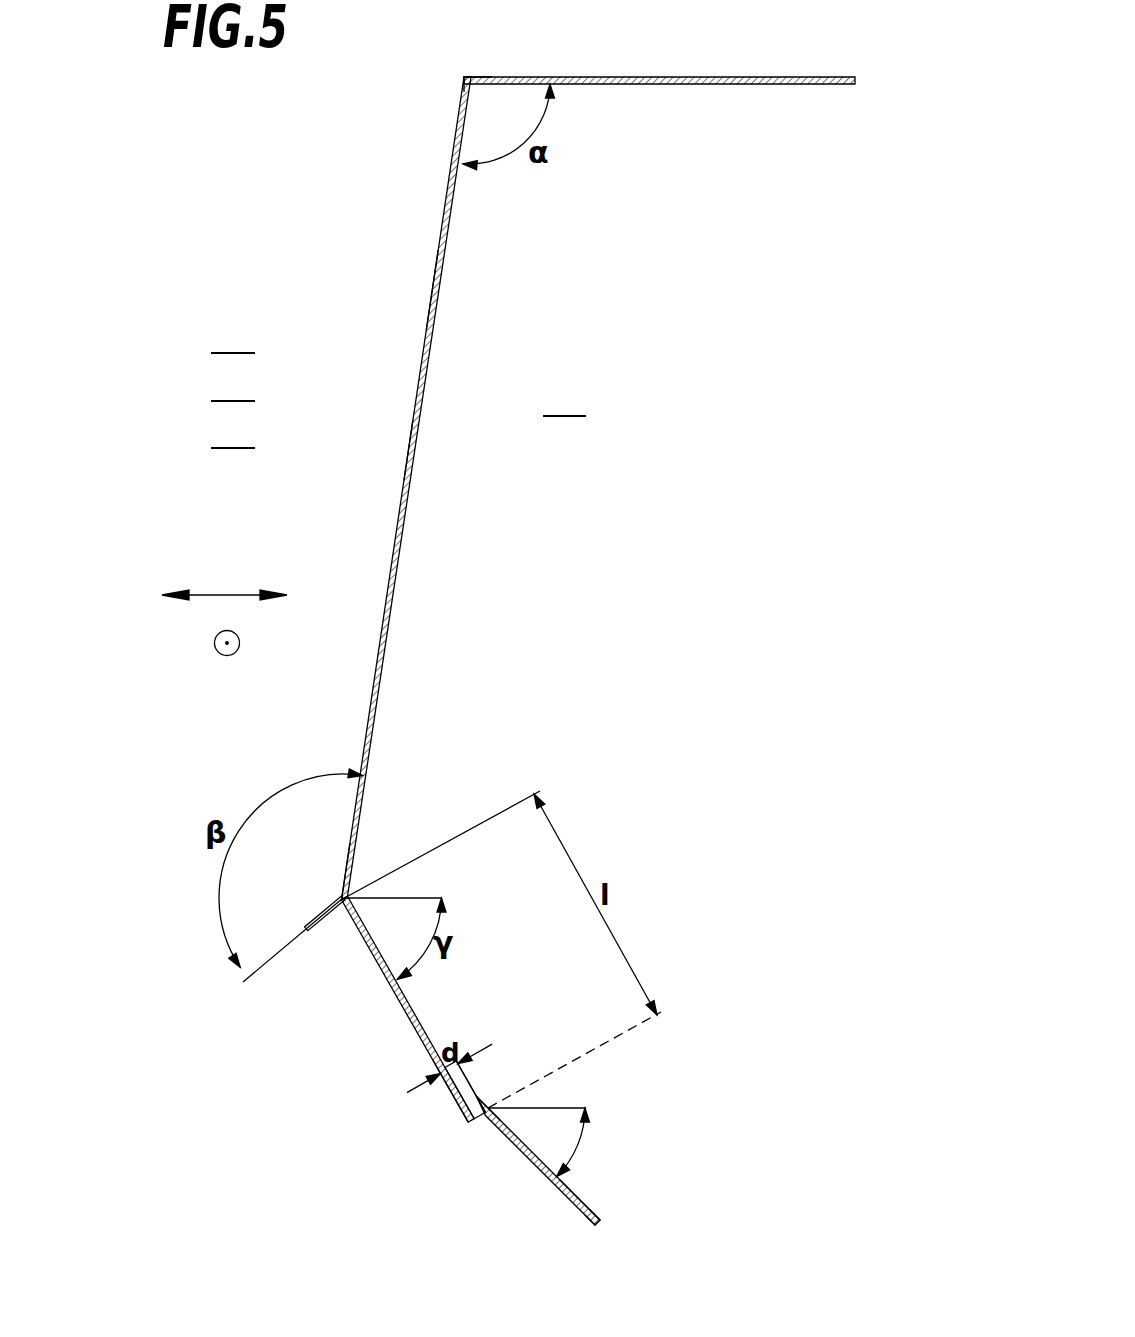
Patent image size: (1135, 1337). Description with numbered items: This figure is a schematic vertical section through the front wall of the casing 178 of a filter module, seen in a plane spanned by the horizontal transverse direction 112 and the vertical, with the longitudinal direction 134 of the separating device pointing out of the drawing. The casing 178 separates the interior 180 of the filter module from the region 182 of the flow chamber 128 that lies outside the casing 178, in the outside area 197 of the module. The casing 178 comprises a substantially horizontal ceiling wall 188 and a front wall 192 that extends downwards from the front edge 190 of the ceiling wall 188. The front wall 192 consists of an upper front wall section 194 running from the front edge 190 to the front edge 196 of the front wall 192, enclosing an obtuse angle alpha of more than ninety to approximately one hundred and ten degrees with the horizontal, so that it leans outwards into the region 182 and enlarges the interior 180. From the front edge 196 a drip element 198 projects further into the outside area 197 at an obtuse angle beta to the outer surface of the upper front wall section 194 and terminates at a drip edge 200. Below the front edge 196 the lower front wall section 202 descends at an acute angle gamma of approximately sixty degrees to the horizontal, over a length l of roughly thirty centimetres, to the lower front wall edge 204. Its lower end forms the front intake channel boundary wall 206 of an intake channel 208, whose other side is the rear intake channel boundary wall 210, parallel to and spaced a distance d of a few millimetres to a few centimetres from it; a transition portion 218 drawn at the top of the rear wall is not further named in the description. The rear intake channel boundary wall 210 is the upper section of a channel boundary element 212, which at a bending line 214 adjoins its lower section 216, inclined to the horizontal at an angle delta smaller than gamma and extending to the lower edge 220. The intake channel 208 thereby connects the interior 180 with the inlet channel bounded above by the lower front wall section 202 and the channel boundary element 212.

The horizontal transverse direction 112 is at (225, 594).
The flow chamber 128 is at (233, 341).
The longitudinal direction 134 is at (240, 640).
The casing 178 is at (426, 204).
The interior 180 is at (564, 404).
The region 182 is at (233, 389).
The ceiling wall 188 is at (796, 77).
The front edge 190 is at (464, 78).
The front wall 192 is at (418, 290).
The upper front wall section 194 is at (409, 452).
The front edge 196 is at (341, 898).
The outside area 197 is at (233, 436).
The drip element 198 is at (321, 912).
The drip edge 200 is at (316, 927).
The lower front wall section 202 is at (407, 1003).
The lower front wall edge 204 is at (468, 1121).
The front intake channel boundary wall 206 is at (455, 1100).
The intake channel 208 is at (479, 1135).
The rear intake channel boundary wall 210 is at (489, 1100).
The channel boundary element 212 is at (567, 1187).
The bending line 214 is at (492, 1108).
The lower section 216 is at (583, 1203).
The web surface 218 is at (477, 1092).
The lower edge 220 is at (600, 1221).